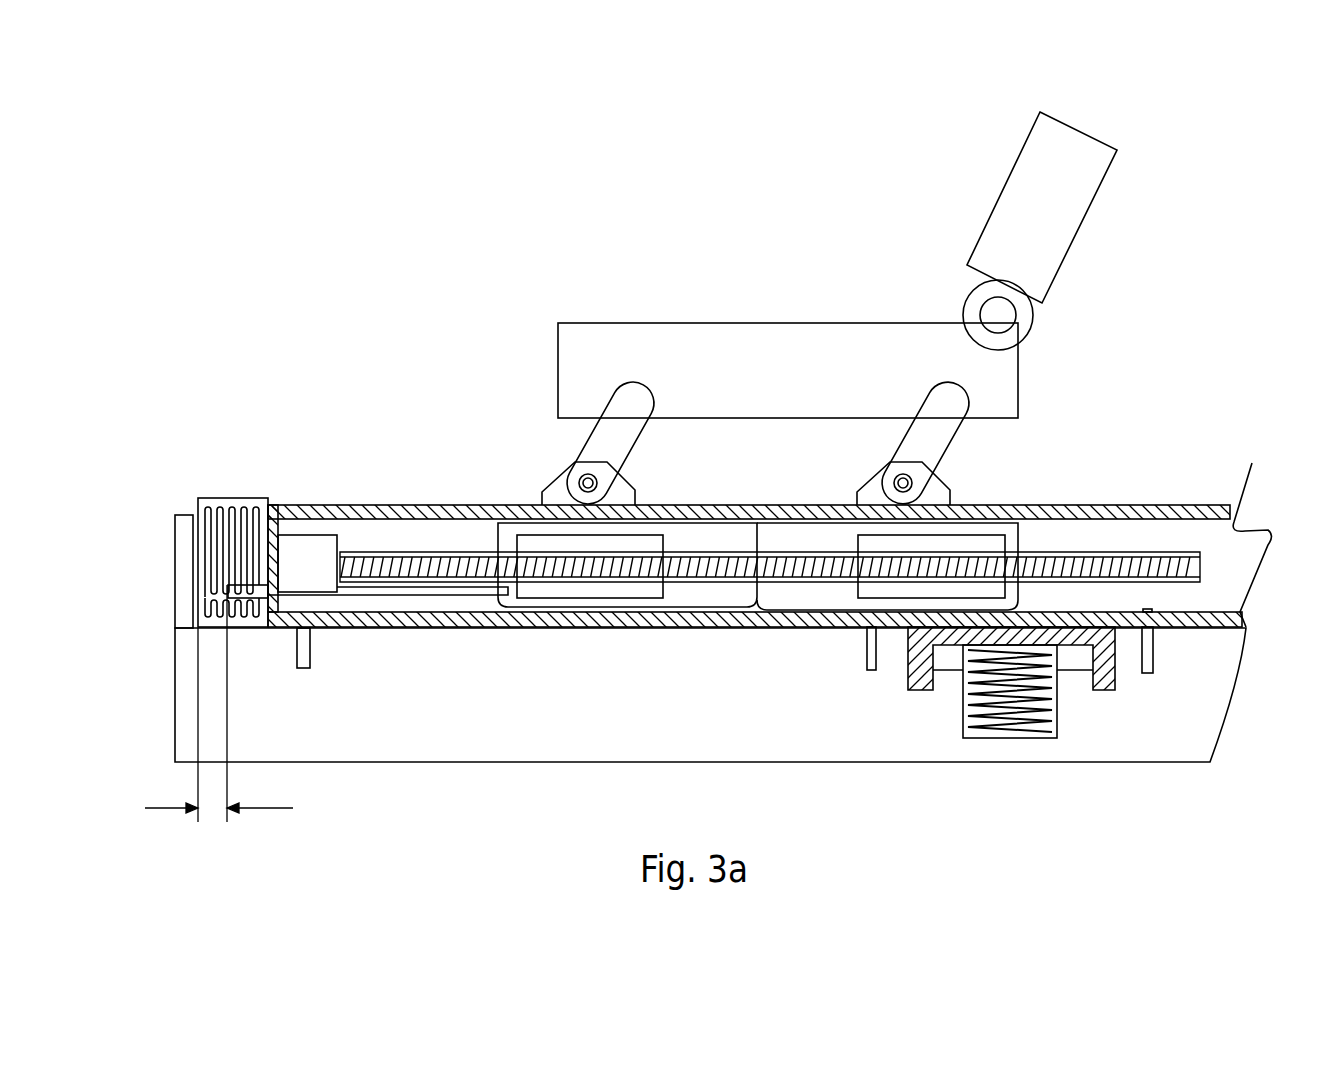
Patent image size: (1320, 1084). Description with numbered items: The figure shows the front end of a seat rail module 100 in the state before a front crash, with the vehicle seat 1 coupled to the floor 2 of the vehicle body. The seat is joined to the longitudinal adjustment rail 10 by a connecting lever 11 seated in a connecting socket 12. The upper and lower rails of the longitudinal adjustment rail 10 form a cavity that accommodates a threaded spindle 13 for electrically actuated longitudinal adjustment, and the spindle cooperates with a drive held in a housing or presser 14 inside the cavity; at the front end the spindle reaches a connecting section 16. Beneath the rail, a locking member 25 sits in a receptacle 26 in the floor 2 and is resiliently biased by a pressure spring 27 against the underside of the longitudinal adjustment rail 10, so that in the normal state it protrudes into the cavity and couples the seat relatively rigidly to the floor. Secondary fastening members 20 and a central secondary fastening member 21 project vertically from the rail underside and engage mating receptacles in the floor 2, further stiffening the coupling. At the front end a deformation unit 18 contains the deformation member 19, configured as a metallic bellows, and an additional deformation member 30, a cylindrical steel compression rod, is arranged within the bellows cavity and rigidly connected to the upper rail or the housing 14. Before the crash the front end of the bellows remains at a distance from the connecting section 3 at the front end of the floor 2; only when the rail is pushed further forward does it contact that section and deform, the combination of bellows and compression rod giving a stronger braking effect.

The seat rail module 100 is at (262, 210).
The vehicle seat 1 is at (775, 338).
The floor of vehicle body 2 is at (668, 748).
The connecting section at front end of floor 3 is at (182, 569).
The longitudinal adjustment rail 10 is at (282, 506).
The connecting lever 11 is at (930, 438).
The connecting socket 12 is at (933, 492).
The threaded spindle 13 is at (1142, 553).
The housing/presser 14 is at (702, 595).
The connecting section for spindle 16 is at (326, 552).
The deformation unit 18 is at (236, 497).
The deformation member 19 is at (198, 510).
The secondary fastening member 20 is at (302, 658).
The central secondary fastening member 21 is at (870, 658).
The locking member 25 is at (933, 640).
The receptacle in floor of vehicle body 26 is at (1057, 695).
The pressure spring 27 is at (975, 698).
The additional deformation member 30 is at (249, 597).